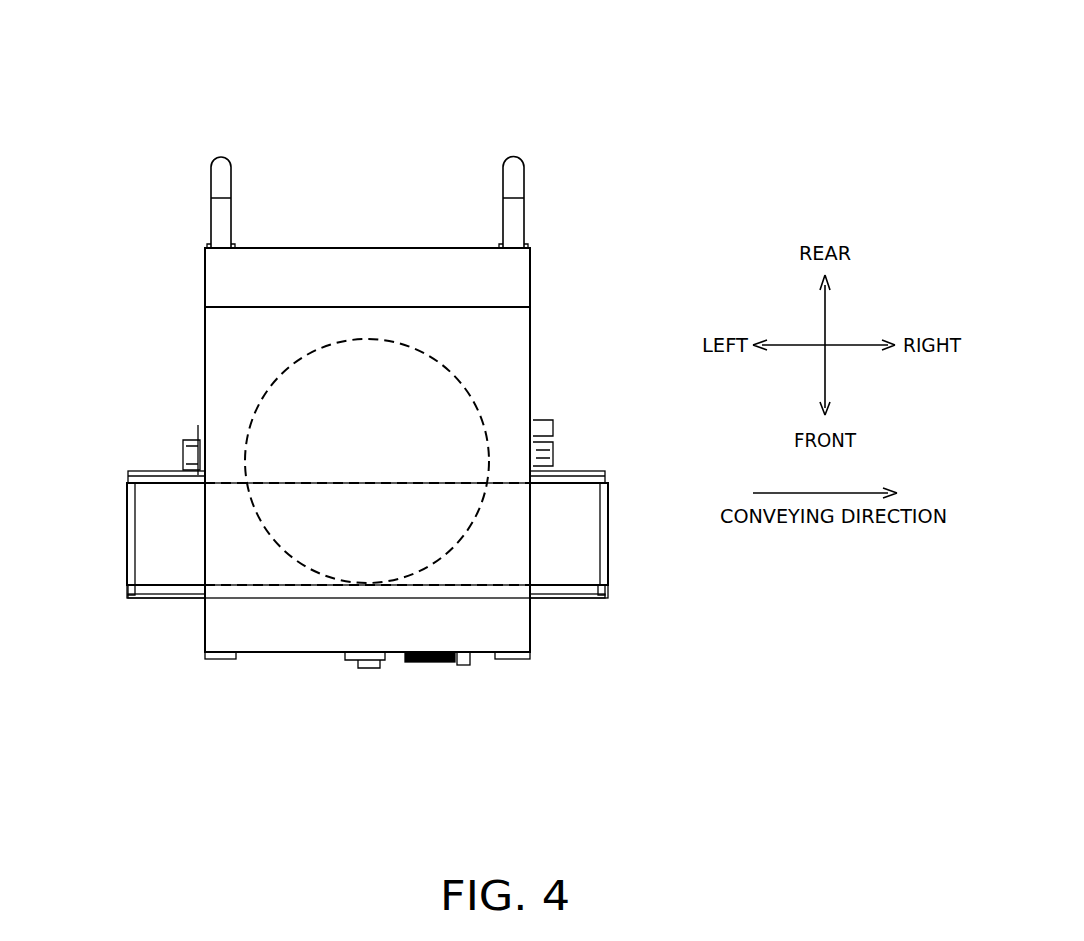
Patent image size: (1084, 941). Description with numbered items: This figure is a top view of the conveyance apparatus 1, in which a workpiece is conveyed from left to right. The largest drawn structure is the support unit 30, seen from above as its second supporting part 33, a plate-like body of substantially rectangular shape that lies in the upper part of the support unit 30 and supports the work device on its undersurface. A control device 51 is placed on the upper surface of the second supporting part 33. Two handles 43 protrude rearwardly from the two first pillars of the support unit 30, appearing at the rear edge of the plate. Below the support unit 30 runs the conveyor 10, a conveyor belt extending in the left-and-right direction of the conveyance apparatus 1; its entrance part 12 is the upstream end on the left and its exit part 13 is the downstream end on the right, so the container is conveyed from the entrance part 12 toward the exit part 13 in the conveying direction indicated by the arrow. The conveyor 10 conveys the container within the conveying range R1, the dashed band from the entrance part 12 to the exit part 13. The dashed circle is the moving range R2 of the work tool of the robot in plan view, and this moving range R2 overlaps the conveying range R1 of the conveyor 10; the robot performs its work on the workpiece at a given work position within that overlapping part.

The conveyance apparatus 1 is at (697, 107).
The conveyor 10 is at (140, 597).
The entrance part 12 is at (127, 522).
The exit part 13 is at (608, 525).
The support unit 30 is at (532, 290).
The second supporting part 33 is at (228, 282).
The handles 43 is at (218, 153).
The control device 51 is at (268, 632).
The conveying range R1 is at (485, 585).
The moving range R2 is at (265, 388).